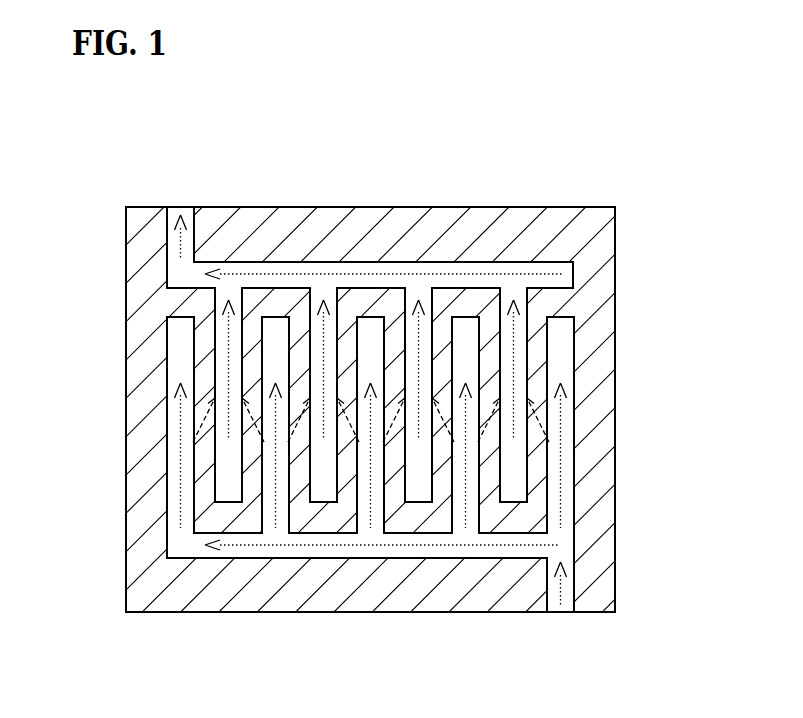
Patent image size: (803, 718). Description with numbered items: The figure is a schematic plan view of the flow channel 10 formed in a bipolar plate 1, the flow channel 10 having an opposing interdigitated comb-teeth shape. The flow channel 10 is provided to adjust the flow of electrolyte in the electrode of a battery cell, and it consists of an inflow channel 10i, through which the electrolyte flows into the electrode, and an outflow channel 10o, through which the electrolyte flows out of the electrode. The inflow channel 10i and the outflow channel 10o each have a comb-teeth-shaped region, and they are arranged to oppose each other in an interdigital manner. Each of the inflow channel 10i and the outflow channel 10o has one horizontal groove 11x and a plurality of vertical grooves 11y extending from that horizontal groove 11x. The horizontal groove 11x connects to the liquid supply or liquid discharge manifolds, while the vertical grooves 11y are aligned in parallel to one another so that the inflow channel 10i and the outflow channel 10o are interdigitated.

The bipolar plate 1 is at (618, 197).
The flow channel 10 is at (401, 455).
The inflow channel 10i is at (63, 505).
The outflow channel 10o is at (700, 265).
The horizontal groove 11x is at (562, 272).
The vertical grooves 11y is at (518, 318).